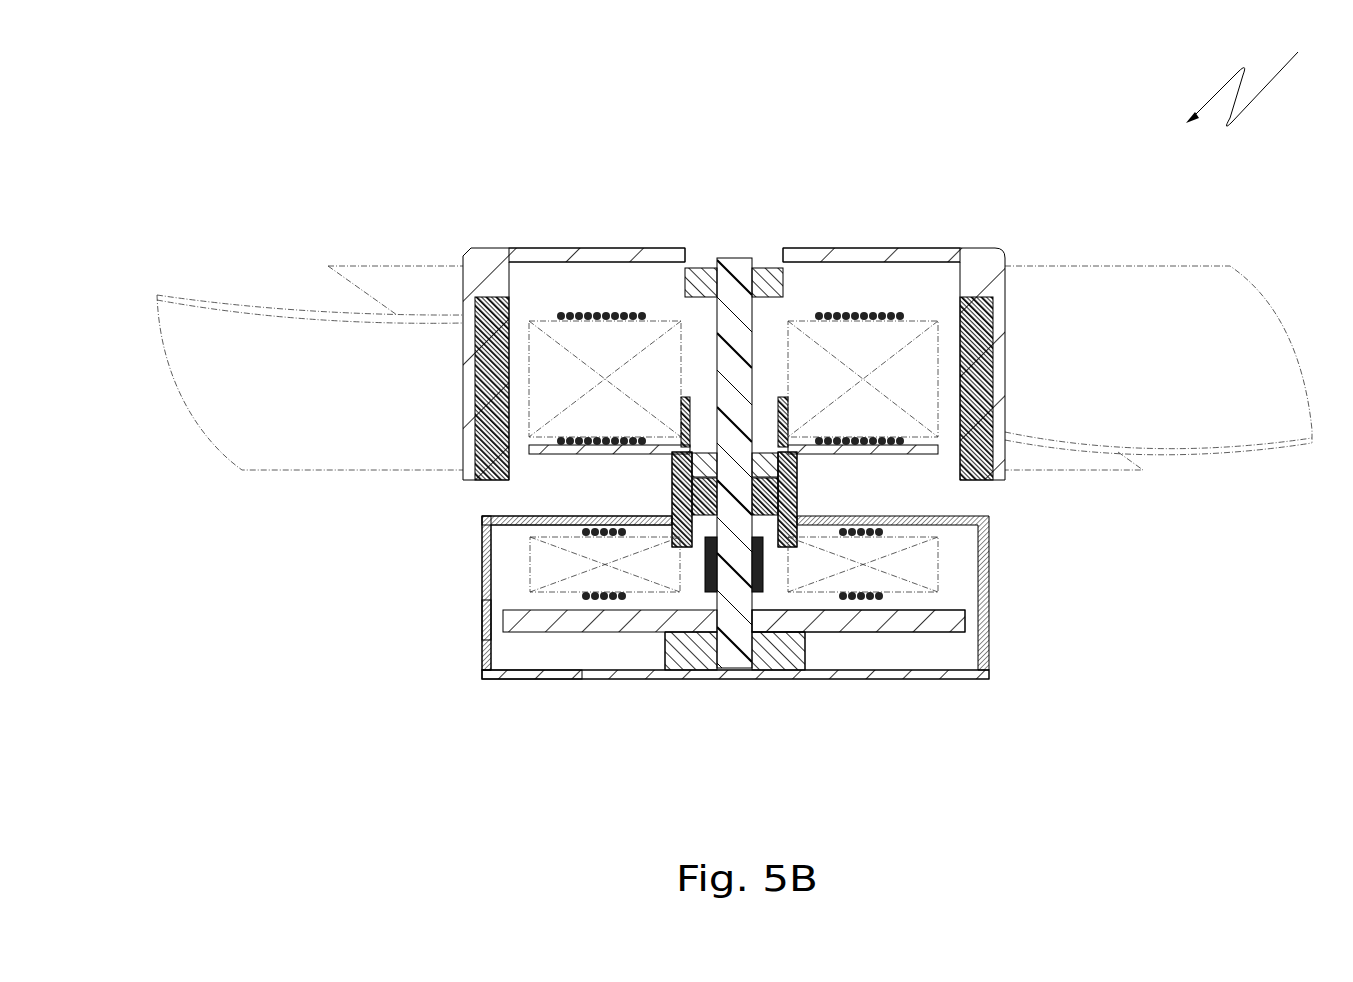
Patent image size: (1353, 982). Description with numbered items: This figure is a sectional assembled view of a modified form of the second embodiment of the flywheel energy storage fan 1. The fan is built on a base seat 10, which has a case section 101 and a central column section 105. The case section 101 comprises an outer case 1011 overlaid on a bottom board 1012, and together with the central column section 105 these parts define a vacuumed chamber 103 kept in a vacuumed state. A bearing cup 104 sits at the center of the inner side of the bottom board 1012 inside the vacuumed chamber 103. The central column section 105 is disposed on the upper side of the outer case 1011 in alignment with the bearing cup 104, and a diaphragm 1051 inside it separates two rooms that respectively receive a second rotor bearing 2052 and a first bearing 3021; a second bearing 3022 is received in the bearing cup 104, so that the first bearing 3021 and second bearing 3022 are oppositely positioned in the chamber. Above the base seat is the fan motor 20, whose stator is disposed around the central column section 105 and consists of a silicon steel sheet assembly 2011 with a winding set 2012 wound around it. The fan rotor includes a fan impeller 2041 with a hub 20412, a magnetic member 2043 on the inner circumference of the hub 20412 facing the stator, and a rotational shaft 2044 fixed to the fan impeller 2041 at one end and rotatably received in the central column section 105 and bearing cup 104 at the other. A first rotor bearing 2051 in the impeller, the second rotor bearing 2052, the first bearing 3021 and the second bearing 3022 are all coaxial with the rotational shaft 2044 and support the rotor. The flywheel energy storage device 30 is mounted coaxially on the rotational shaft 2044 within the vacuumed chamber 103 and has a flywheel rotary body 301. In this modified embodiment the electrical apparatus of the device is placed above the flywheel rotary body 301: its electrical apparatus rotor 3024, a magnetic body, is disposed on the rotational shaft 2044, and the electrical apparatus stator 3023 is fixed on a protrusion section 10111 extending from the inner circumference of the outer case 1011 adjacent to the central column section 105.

The flywheel energy storage fan 1 is at (1247, 72).
The fan motor 20 is at (468, 246).
The fan impeller 2041 is at (582, 247).
The hub 20412 is at (933, 253).
The magnetic member 2043 is at (990, 300).
The rotational shaft 2044 is at (725, 258).
The first rotor bearing 2051 is at (700, 268).
The silicon steel sheet assembly 2011 is at (920, 328).
The winding set 2012 is at (860, 312).
The central column section 105 is at (673, 472).
The diaphragm 1051 is at (672, 493).
The second rotor bearing 2052 is at (797, 470).
The first bearing 3021 is at (797, 500).
The base seat 10 is at (478, 520).
The protrusion section 10111 is at (673, 538).
The case section 101 is at (482, 580).
The outer case 1011 is at (482, 640).
The bottom board 1012 is at (482, 677).
The vacuumed chamber 103 is at (524, 652).
The electrical apparatus rotor 3024 is at (717, 590).
The second bearing 3022 is at (768, 650).
The bearing cup 104 is at (795, 645).
The flywheel energy storage device 30 is at (966, 612).
The flywheel rotary body 301 is at (962, 623).
The electrical apparatus stator 3023 is at (944, 555).